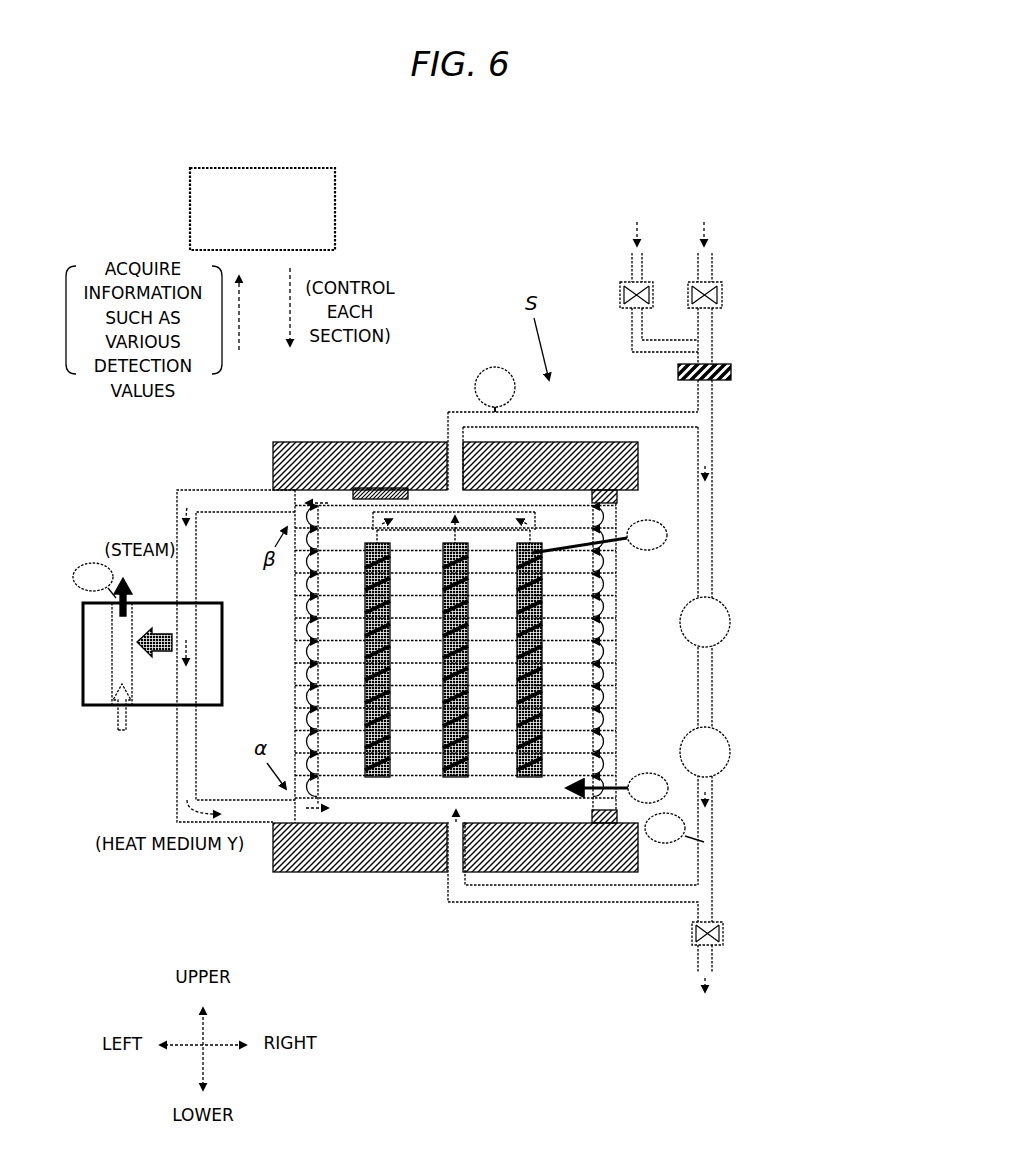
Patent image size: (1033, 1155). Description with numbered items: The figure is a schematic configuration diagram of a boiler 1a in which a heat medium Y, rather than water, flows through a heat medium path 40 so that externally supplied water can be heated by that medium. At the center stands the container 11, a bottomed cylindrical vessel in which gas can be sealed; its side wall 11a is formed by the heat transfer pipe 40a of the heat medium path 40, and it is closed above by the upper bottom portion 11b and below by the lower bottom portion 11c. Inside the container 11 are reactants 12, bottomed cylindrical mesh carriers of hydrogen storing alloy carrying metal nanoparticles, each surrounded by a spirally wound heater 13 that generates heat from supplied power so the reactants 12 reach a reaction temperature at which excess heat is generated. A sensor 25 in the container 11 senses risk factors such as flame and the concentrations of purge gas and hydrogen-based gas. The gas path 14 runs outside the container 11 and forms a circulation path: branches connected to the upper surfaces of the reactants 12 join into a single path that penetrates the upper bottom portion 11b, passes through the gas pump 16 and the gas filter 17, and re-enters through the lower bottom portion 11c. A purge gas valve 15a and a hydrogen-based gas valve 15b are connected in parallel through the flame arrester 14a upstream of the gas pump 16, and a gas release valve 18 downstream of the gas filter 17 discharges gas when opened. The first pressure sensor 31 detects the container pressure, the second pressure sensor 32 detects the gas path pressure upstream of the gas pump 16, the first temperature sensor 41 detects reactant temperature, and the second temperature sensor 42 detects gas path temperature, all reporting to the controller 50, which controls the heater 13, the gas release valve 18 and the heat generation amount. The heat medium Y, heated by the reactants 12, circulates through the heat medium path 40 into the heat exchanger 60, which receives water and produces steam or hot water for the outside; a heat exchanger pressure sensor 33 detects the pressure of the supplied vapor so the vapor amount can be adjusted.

The boiler 1a is at (683, 226).
The container 11 is at (337, 426).
The side wall 11a is at (294, 652).
The upper bottom portion 11b is at (297, 441).
The lower bottom portion 11c is at (296, 873).
The reactant 12 is at (376, 778).
The heater 13 is at (382, 778).
The gas path 14 is at (578, 412).
The flame arrester 14a is at (715, 382).
The purge gas valve 15a is at (620, 293).
The hydrogen-based gas valve 15b is at (722, 293).
The gas pump 16 is at (690, 603).
The gas filter 17 is at (690, 733).
The gas release valve 18 is at (690, 935).
The sensor 25 is at (378, 488).
The first pressure sensor 31 is at (650, 773).
The second pressure sensor 32 is at (490, 369).
The heat exchanger pressure sensor 33 is at (102, 563).
The heat medium path 40 is at (200, 490).
The heat transfer pipe 40a is at (488, 796).
The first temperature sensor 41 is at (640, 521).
The second temperature sensor 42 is at (665, 843).
The controller 50 is at (336, 201).
The heat exchanger 60 is at (148, 708).